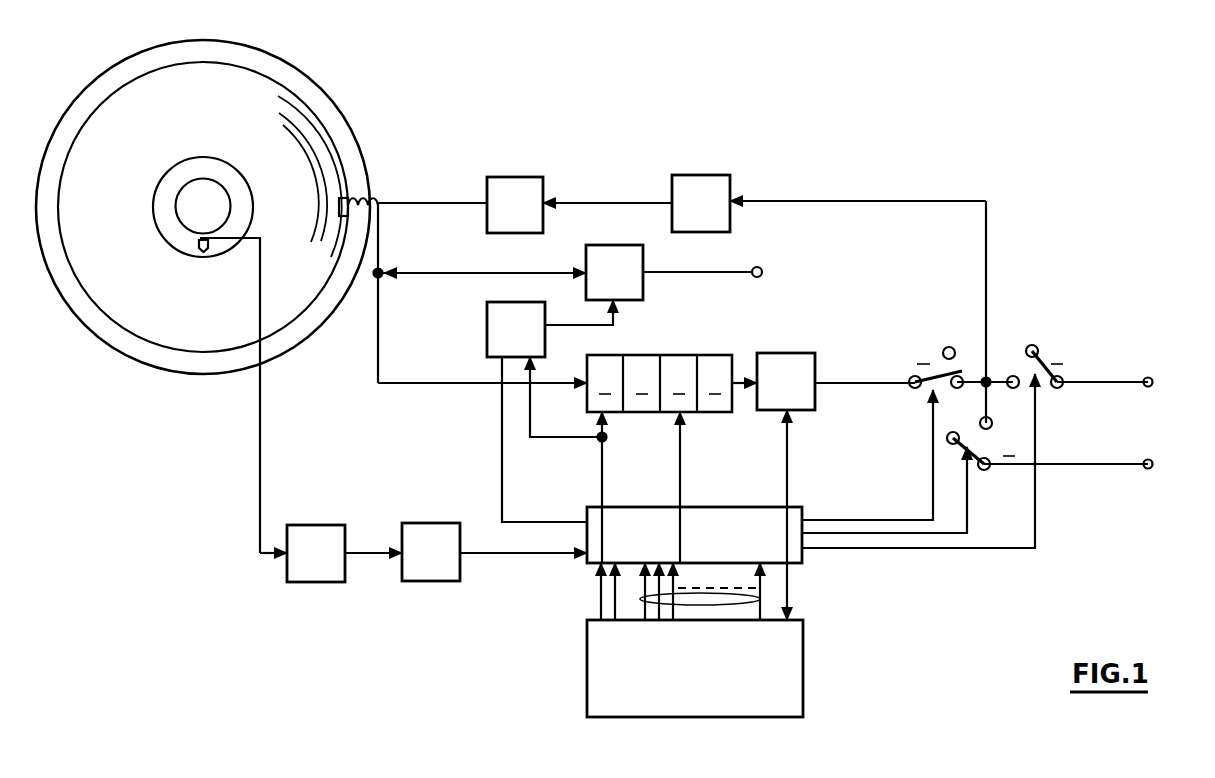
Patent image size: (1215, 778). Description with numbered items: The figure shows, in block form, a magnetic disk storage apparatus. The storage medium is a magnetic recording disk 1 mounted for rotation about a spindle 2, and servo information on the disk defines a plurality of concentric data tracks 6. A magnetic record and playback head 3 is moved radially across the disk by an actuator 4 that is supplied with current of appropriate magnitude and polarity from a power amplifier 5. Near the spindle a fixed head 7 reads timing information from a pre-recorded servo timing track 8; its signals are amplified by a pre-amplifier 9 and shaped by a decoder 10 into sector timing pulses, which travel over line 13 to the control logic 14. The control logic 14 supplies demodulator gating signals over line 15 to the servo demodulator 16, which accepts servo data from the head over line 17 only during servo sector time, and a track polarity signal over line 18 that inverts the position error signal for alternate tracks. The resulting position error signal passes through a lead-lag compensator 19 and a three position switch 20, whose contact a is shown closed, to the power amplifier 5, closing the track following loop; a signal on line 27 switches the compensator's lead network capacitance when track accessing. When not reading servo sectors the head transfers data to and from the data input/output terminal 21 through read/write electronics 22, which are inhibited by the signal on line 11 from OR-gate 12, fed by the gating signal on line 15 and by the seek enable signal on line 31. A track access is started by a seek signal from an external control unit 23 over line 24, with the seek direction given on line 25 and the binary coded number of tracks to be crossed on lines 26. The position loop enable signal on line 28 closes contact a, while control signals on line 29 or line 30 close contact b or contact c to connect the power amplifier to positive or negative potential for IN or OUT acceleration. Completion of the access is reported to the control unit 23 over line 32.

The magnetic recording disk 1 is at (276, 37).
The spindle 2 is at (187, 195).
The magnetic record and playback head 3 is at (348, 200).
The actuator 4 is at (524, 217).
The power amplifier 5 is at (710, 215).
The data tracks 6 is at (328, 130).
The fixed head 7 is at (196, 252).
The servo timing track 8 is at (252, 217).
The pre-amplifier 9 is at (325, 566).
The decoder 10 is at (446, 565).
The line 11 is at (613, 321).
The OR-gate 12 is at (487, 318).
The line 13 is at (496, 553).
The control logic 14 is at (710, 548).
The line 15 is at (602, 480).
The servo demodulator 16 is at (707, 357).
The line 17 is at (435, 382).
The line 18 is at (680, 480).
The lead-lag compensator 19 is at (801, 394).
The three position switch 20 is at (1018, 336).
The data input/output terminal 21 is at (768, 270).
The read/write electronics 22 is at (630, 285).
The external control unit 23 is at (710, 681).
The line 24 is at (601, 591).
The line 25 is at (615, 597).
The lines 26a-n 26 is at (760, 599).
The line 27 is at (787, 480).
The line 28 is at (933, 466).
The line 29 is at (967, 515).
The line 30 is at (1035, 505).
The line 31 is at (502, 480).
The line 32 is at (788, 598).